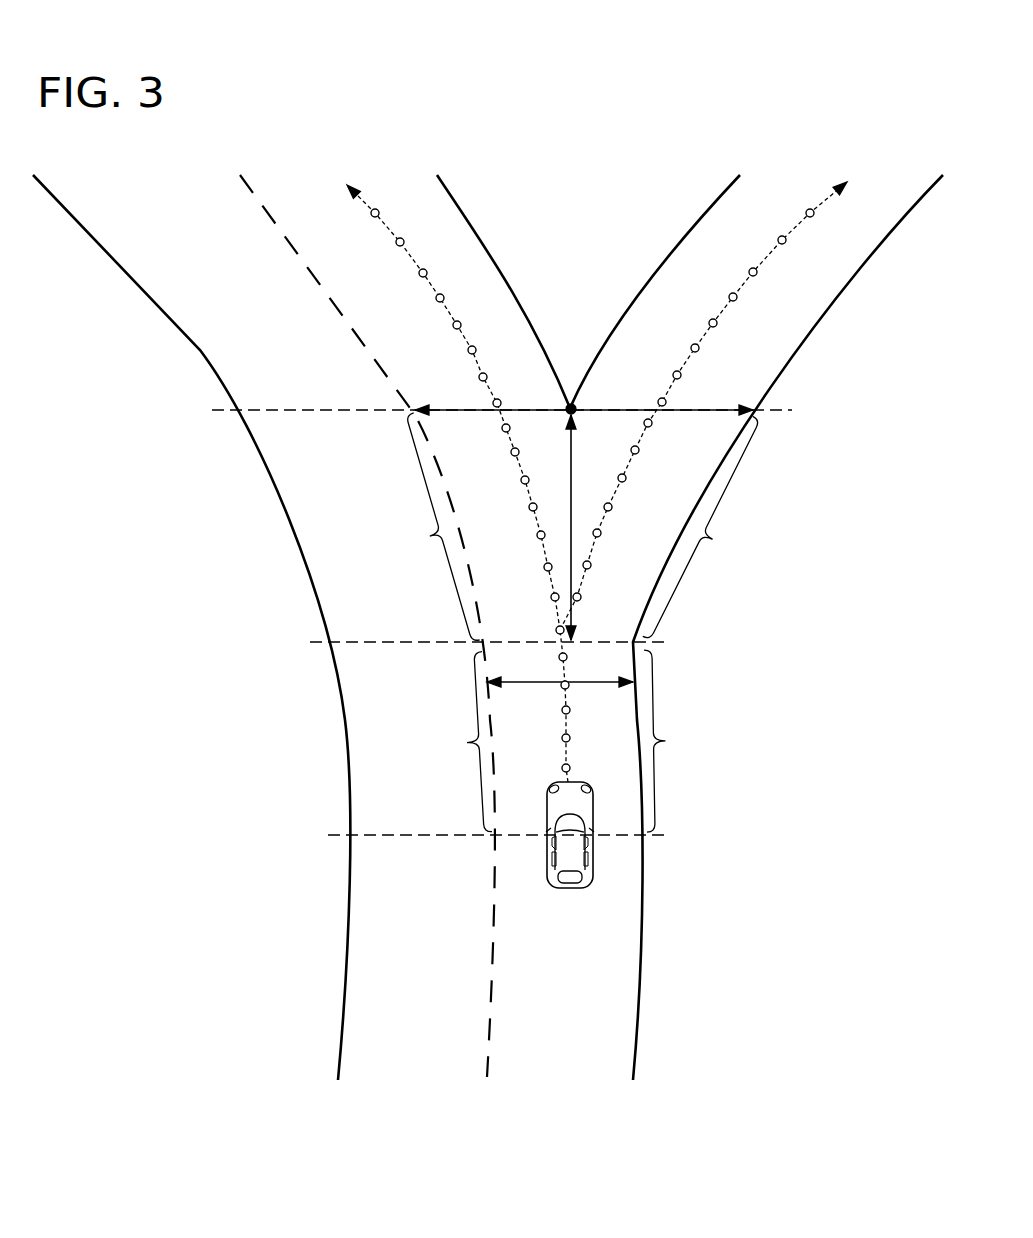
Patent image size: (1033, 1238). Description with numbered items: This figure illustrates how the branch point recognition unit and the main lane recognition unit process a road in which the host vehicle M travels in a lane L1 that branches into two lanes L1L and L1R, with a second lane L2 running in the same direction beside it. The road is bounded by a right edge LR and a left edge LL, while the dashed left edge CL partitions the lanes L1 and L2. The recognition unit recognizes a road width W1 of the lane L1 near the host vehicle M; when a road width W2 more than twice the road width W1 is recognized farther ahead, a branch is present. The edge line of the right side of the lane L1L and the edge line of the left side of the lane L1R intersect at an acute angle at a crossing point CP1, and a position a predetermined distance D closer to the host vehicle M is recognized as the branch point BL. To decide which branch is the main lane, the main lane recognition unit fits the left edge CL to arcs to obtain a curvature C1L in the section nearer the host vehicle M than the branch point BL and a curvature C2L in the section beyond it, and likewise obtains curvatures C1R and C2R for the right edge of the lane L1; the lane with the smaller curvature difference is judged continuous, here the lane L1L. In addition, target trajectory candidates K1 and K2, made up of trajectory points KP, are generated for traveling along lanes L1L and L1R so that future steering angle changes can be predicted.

The left edge LL is at (351, 977).
The right edge LR is at (641, 977).
The left edge CL is at (495, 880).
The lane L1L is at (327, 186).
The lane L1R is at (813, 186).
The lane L1 is at (580, 1066).
The lane L2 is at (435, 1066).
The branch point BL is at (668, 642).
The road width W2 is at (716, 410).
The road width W1 is at (604, 684).
The predetermined distance D is at (574, 470).
The crossing point CP1 is at (571, 404).
The target trajectory candidate K1 is at (352, 185).
The target trajectory candidate K2 is at (851, 184).
The trajectory point KP is at (521, 480).
The curvature C2L is at (428, 526).
The curvature C2R is at (705, 526).
The curvature C1L is at (454, 742).
The curvature C1R is at (683, 741).
The host vehicle M is at (568, 890).